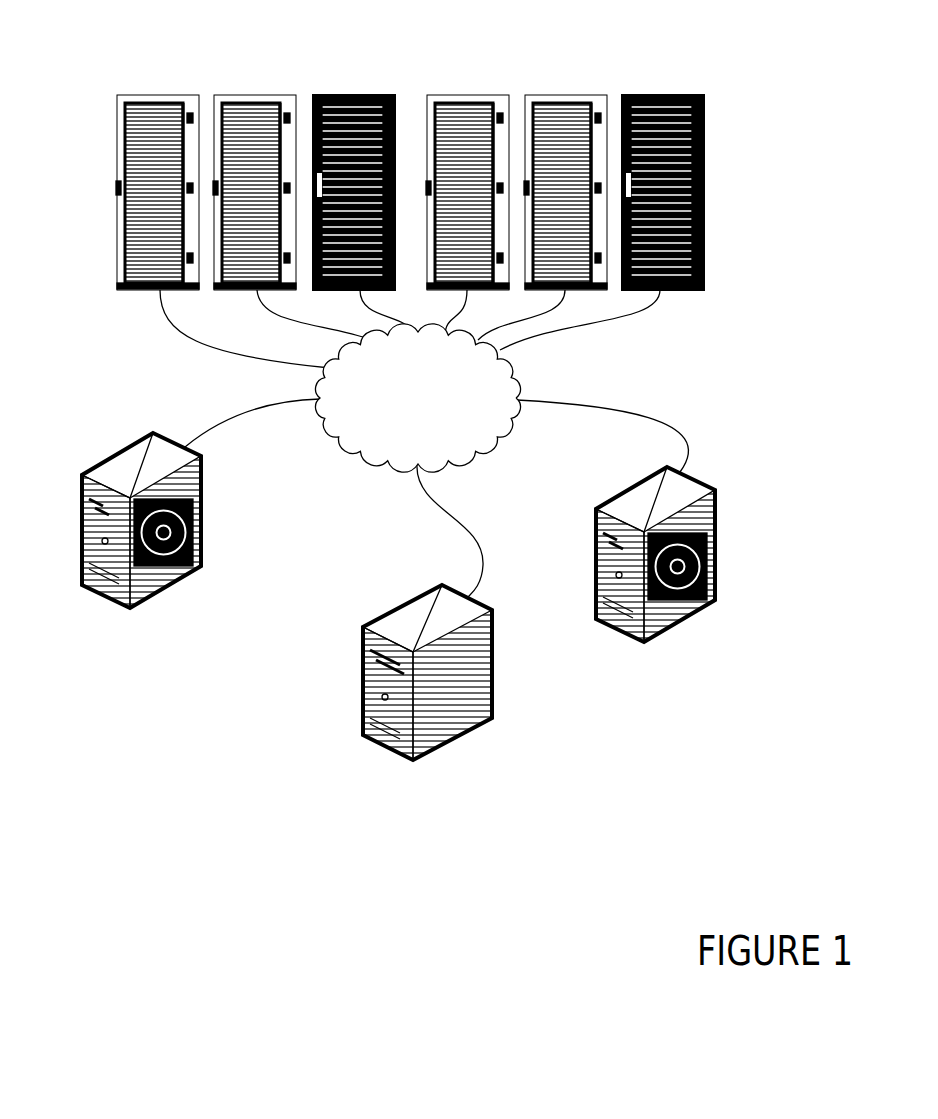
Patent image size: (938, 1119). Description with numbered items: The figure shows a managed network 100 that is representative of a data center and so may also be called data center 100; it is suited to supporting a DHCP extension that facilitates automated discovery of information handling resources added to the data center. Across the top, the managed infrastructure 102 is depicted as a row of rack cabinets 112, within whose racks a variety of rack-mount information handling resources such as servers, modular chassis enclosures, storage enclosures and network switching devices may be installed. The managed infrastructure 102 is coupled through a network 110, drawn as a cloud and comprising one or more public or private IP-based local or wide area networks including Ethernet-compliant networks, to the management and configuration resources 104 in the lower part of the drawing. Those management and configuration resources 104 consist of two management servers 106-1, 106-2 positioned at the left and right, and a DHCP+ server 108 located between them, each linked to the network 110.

The managed network 100 is at (698, 818).
The managed infrastructure 102 is at (410, 150).
The management and configuration resources 104 is at (169, 729).
The management server 106-1 is at (202, 498).
The management server 106-2 is at (715, 527).
The DHCP+ server 108 is at (492, 693).
The network 110 is at (490, 446).
The rack cabinets 112 is at (367, 95).